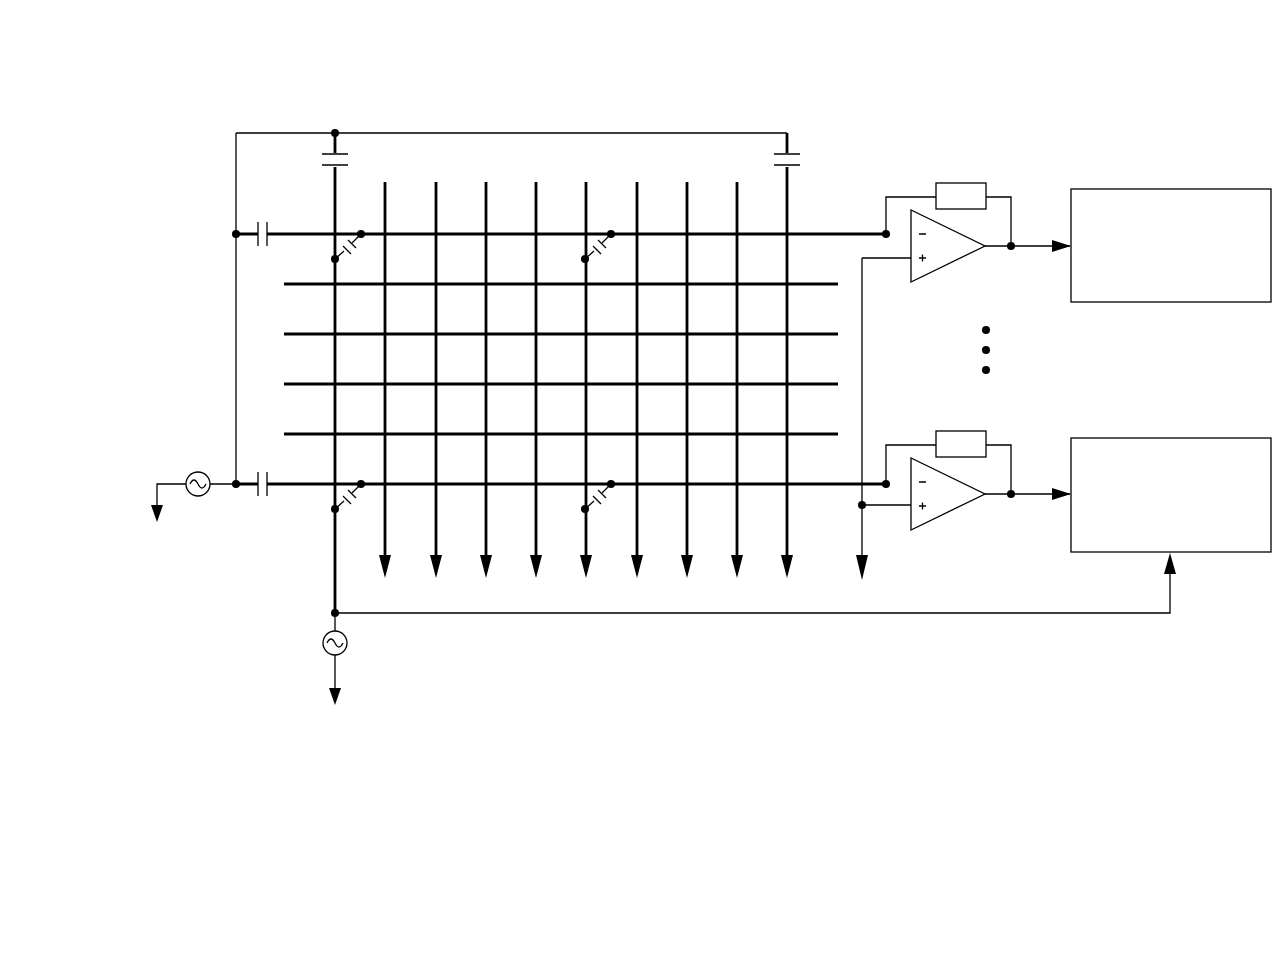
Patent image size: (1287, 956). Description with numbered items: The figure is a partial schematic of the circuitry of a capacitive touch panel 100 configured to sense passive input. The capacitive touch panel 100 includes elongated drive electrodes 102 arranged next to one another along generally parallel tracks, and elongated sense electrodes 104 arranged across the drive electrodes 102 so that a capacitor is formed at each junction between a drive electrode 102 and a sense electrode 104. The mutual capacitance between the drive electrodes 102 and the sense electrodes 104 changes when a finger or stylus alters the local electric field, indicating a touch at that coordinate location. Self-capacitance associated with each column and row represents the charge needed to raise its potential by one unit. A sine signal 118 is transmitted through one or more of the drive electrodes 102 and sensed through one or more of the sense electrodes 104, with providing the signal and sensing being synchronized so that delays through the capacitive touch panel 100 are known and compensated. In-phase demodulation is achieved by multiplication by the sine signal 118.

The capacitive touch panel 100 is at (1080, 92).
The drive electrodes 102 is at (333, 310).
The sense electrodes 104 is at (460, 232).
The sine signal 118 is at (352, 645).